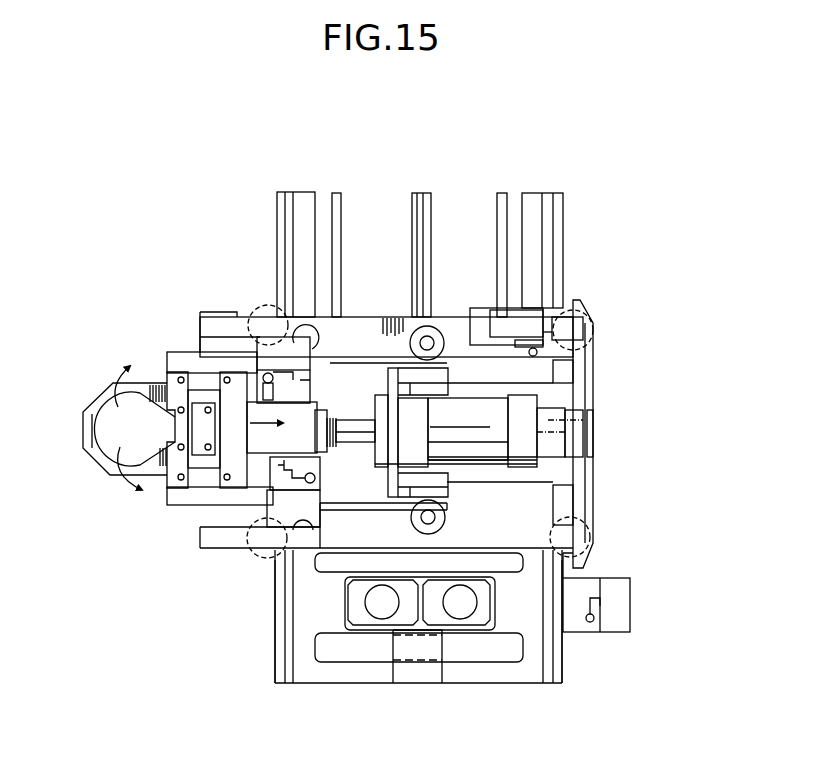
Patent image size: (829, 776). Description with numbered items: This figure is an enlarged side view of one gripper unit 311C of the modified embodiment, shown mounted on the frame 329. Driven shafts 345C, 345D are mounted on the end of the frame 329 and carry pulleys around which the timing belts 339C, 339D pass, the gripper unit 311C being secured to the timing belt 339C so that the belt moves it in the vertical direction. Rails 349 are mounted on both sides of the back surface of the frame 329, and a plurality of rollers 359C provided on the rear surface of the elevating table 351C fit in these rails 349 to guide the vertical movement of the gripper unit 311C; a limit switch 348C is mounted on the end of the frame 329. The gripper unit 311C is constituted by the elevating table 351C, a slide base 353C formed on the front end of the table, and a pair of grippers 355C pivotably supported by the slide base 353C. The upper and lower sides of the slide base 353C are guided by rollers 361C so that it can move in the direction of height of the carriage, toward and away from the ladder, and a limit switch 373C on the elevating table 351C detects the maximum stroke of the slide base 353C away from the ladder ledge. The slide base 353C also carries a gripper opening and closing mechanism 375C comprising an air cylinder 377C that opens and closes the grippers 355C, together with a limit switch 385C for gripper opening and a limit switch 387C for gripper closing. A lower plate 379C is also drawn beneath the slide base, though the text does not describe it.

The gripper unit 311C is at (152, 365).
The frame 329 is at (533, 678).
The timing belt 339C is at (333, 206).
The timing belt 339D is at (505, 208).
The driven shaft 345C is at (382, 614).
The driven shaft 345D is at (460, 619).
The limit switch 348C is at (622, 632).
The rail 349 is at (275, 662).
The elevating table 351C is at (448, 313).
The slide base 353C is at (182, 352).
The gripper 355C is at (92, 457).
The roller 359C is at (267, 340).
The roller 361C is at (318, 330).
The limit switch 373C is at (577, 330).
The gripper opening and closing mechanism 375C is at (358, 352).
The air cylinder 377C is at (497, 455).
The lower plate 379C is at (227, 487).
The limit switch for gripper opening 385C is at (320, 513).
The limit switch for gripper closing 387C is at (262, 333).